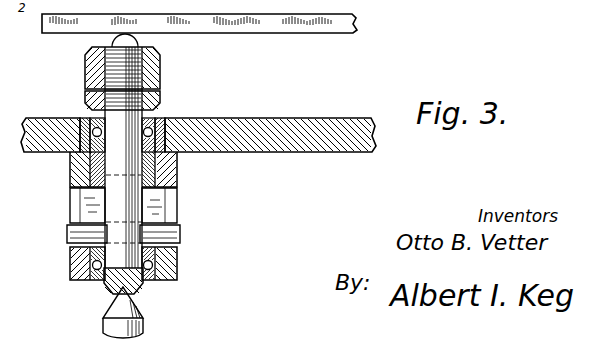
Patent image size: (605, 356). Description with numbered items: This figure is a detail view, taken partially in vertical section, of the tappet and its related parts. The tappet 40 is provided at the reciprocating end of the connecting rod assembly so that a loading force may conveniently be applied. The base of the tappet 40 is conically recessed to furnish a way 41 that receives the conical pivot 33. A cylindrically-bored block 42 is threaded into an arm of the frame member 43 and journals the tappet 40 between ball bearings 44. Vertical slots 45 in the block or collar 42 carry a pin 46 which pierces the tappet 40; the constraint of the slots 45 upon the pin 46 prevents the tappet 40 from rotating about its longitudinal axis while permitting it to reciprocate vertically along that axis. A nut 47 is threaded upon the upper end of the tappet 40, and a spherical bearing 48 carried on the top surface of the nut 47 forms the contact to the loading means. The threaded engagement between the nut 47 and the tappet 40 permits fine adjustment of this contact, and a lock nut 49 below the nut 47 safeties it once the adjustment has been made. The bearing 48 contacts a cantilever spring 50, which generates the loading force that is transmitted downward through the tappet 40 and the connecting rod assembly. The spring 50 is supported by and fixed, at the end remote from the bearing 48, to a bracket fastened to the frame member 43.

The conical pivot 33 is at (142, 309).
The tappet 40 is at (127, 158).
The way 41 is at (116, 297).
The cylindrically-bored block 42 is at (72, 167).
The frame member 43 is at (323, 143).
The ball bearings 44 is at (90, 118).
The vertical slots 45 is at (80, 212).
The pin 46 is at (72, 236).
The nut 47 is at (163, 77).
The spherical bearing 48 is at (114, 39).
The lock nut 49 is at (162, 98).
The cantilever spring 50 is at (262, 33).